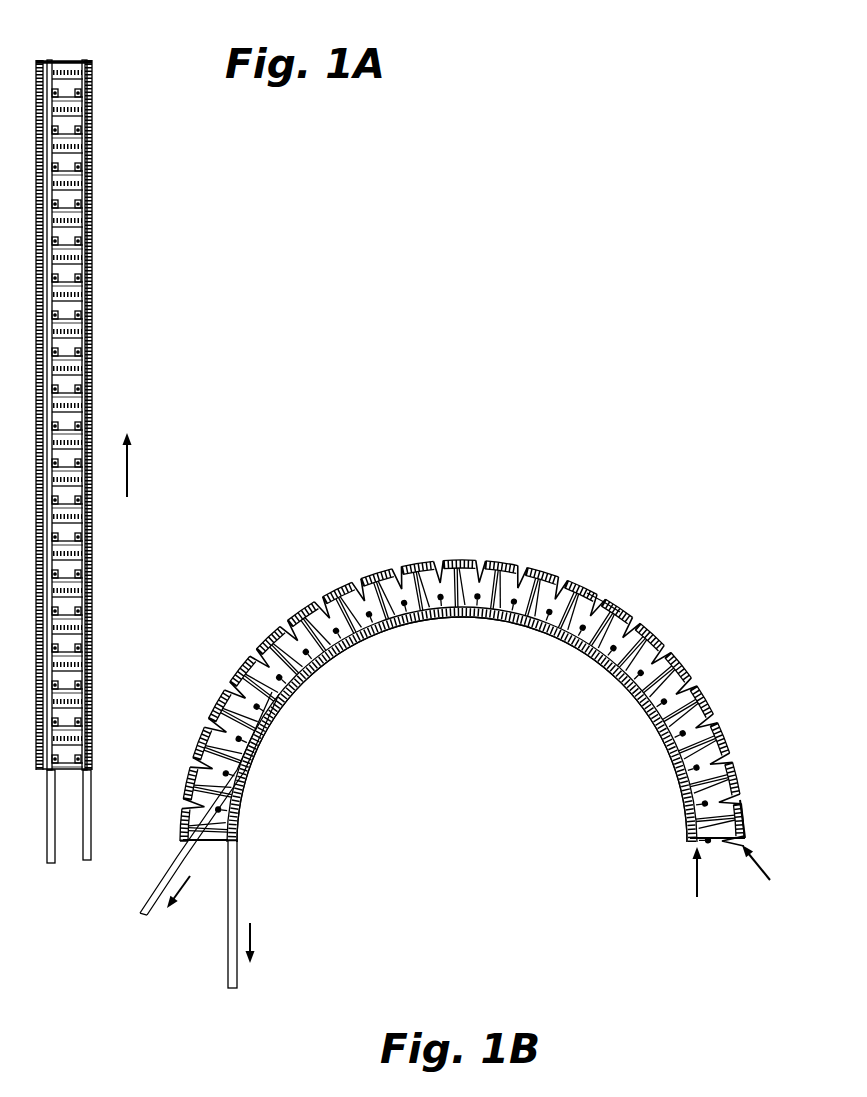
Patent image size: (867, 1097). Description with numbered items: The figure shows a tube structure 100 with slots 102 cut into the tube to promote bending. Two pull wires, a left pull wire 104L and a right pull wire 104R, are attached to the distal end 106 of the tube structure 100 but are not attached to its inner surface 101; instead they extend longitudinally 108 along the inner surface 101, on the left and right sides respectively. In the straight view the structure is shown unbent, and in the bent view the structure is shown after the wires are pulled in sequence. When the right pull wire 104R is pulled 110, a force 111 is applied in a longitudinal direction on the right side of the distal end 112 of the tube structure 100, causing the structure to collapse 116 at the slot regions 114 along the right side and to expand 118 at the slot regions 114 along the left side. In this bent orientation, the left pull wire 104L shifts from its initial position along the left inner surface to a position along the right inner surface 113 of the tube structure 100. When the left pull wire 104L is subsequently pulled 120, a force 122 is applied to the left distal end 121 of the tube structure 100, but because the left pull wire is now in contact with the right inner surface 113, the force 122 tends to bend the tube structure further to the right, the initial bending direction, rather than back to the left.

In FIG. 1A, the tube structure 100 is at (149, 474).
In FIG. 1A, the inner surface 101 is at (88, 335).
In FIG. 1A, the slots 102 is at (86, 118).
In FIG. 1A, the distal end 106 is at (72, 62).
In FIG. 1A, the longitudinal direction 108 is at (132, 477).
In FIG. 1A, the left pull wire 104L is at (56, 866).
In FIG. 1B, the left pull wire 104L is at (163, 880).
In FIG. 1A, the right pull wire 104R is at (93, 812).
In FIG. 1B, the right pull wire 104R is at (228, 982).
In FIG. 1B, the pulling of right pull wire 110 is at (253, 928).
In FIG. 1B, the force 111 is at (694, 887).
In FIG. 1B, the right side of distal end 112 is at (683, 808).
In FIG. 1B, the right inner surface 113 is at (586, 654).
In FIG. 1B, the slot regions 114 is at (355, 582).
In FIG. 1B, the collapse 116 is at (450, 620).
In FIG. 1B, the expansion 118 is at (614, 594).
In FIG. 1B, the pulling of left pull wire 120 is at (188, 880).
In FIG. 1B, the left distal end 121 is at (748, 836).
In FIG. 1B, the force 122 is at (768, 880).